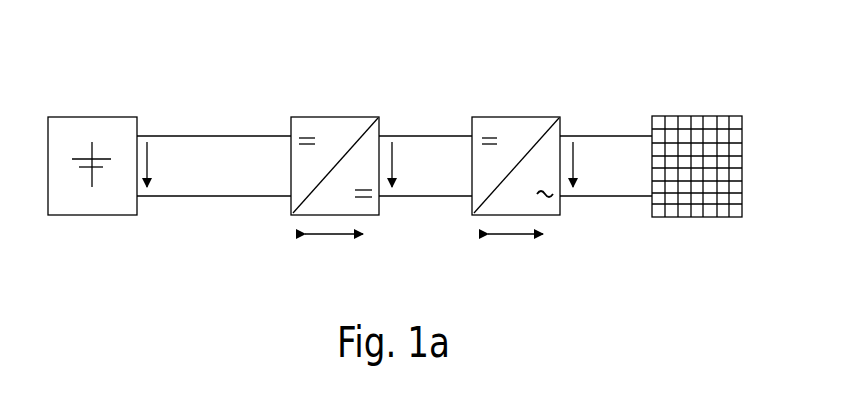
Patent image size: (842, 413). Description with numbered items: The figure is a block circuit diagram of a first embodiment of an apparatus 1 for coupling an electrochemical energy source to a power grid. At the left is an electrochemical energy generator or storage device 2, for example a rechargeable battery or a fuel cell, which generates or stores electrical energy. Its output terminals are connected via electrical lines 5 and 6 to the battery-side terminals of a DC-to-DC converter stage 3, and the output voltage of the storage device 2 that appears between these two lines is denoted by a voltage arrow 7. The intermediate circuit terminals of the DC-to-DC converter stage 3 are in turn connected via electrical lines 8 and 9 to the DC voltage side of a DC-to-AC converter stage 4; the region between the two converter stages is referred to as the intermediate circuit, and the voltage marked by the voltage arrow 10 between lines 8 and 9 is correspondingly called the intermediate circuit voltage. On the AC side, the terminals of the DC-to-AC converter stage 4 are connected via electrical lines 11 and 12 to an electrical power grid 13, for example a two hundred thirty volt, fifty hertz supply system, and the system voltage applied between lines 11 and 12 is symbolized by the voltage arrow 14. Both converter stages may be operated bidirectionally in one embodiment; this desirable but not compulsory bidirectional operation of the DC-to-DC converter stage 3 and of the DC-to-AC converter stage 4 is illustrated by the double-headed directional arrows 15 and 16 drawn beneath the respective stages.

The apparatus 1 is at (238, 277).
The electrochemical storage device 2 is at (73, 216).
The DC-to-DC converter stage 3 is at (345, 116).
The DC-to-AC converter stage 4 is at (522, 116).
The electrical line 5 is at (210, 135).
The electrical line 6 is at (217, 197).
The voltage arrow 7 is at (151, 158).
The electrical line 8 is at (449, 133).
The electrical line 9 is at (416, 197).
The voltage arrow 10 is at (396, 160).
The electrical line 11 is at (632, 132).
The electrical line 12 is at (615, 197).
The electrical power grid 13 is at (707, 218).
The voltage arrow 14 is at (575, 158).
The directional arrow 15 is at (333, 237).
The directional arrow 16 is at (509, 238).